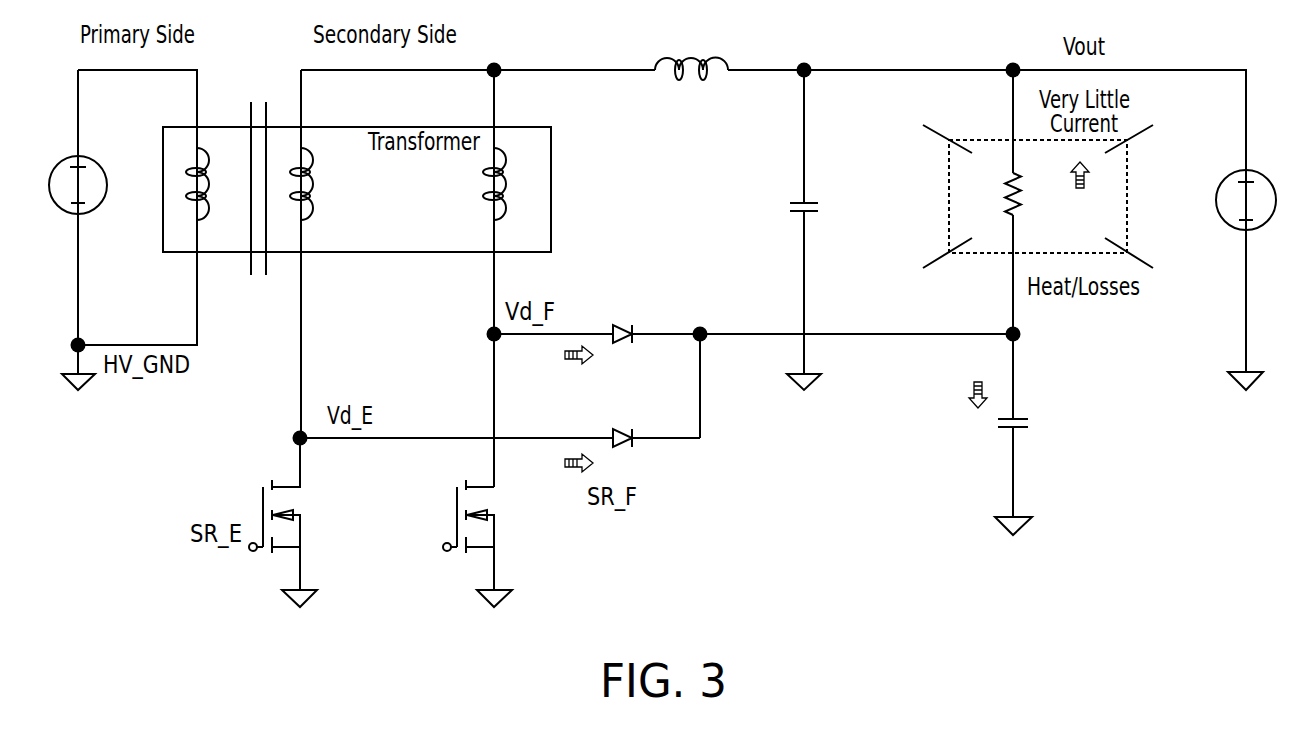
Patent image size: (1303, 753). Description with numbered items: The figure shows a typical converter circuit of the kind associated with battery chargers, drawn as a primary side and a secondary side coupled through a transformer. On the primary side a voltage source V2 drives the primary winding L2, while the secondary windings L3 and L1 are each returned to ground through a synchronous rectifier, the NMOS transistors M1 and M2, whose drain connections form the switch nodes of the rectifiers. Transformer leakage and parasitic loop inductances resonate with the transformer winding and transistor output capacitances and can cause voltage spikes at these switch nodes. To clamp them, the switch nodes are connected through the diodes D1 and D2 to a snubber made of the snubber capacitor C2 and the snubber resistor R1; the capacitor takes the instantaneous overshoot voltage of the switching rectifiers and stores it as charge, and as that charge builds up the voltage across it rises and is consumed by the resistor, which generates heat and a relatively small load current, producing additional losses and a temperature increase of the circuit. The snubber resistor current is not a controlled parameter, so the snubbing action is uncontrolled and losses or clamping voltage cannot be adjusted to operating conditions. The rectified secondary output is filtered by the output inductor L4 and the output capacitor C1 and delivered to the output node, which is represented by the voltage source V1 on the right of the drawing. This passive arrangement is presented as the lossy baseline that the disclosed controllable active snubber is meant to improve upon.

The primary side voltage source V2 is at (86, 191).
The primary winding inductor L2 is at (214, 184).
The secondary winding inductor L3 is at (315, 184).
The secondary winding inductor L1 is at (509, 184).
The output inductor Lout L4 is at (691, 70).
The output capacitor Cout C1 is at (823, 209).
The snubber resistor Rsnub R1 is at (1046, 193).
The snubber capacitor Csnub C2 is at (1039, 424).
The output voltage source V1 is at (1253, 204).
The diode D2 is at (626, 327).
The diode D1 is at (626, 440).
The NMOS synchronous rectifier transistor M1 is at (307, 514).
The NMOS synchronous rectifier transistor M2 is at (501, 535).